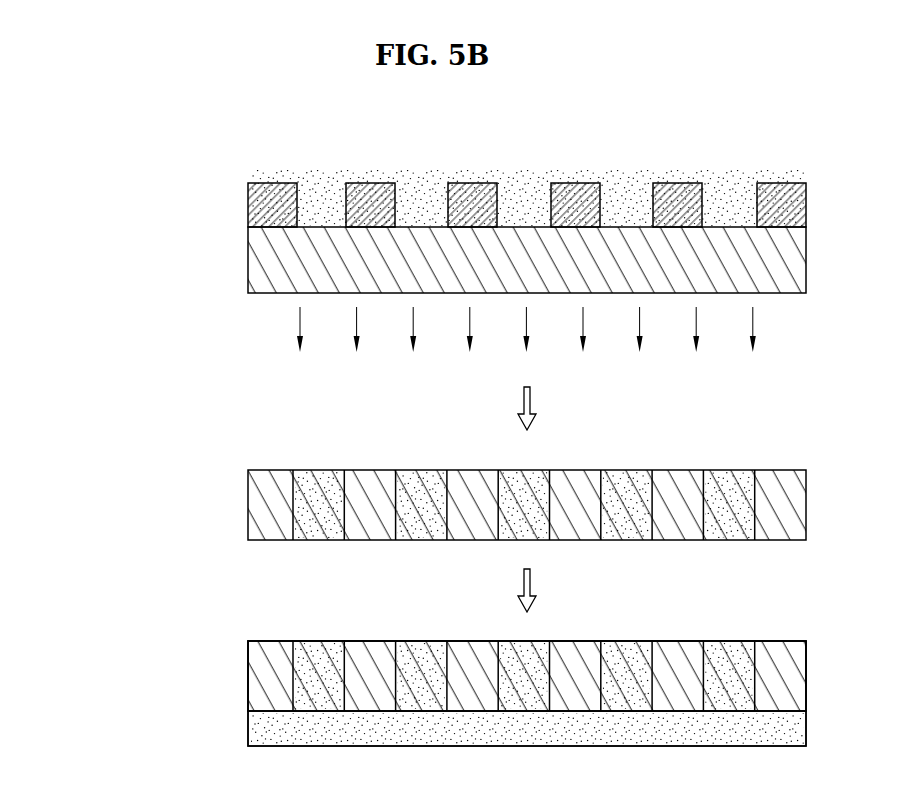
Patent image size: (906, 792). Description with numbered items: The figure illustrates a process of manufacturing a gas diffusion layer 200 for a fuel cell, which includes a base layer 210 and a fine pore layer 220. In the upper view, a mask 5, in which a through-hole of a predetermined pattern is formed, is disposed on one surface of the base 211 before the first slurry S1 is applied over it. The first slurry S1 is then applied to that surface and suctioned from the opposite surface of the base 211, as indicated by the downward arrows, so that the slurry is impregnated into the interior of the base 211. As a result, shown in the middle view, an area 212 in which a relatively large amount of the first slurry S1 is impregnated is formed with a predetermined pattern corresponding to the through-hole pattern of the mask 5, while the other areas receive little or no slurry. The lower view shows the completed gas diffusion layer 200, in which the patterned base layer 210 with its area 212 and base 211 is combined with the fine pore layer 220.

The mask 5 is at (262, 204).
The base 211 is at (262, 260).
The area 212 is at (320, 470).
The first slurry S1 is at (523, 190).
The base layer 210 is at (148, 625).
The fine pore layer 220 is at (263, 729).
The gas diffusion layer 200 is at (76, 660).